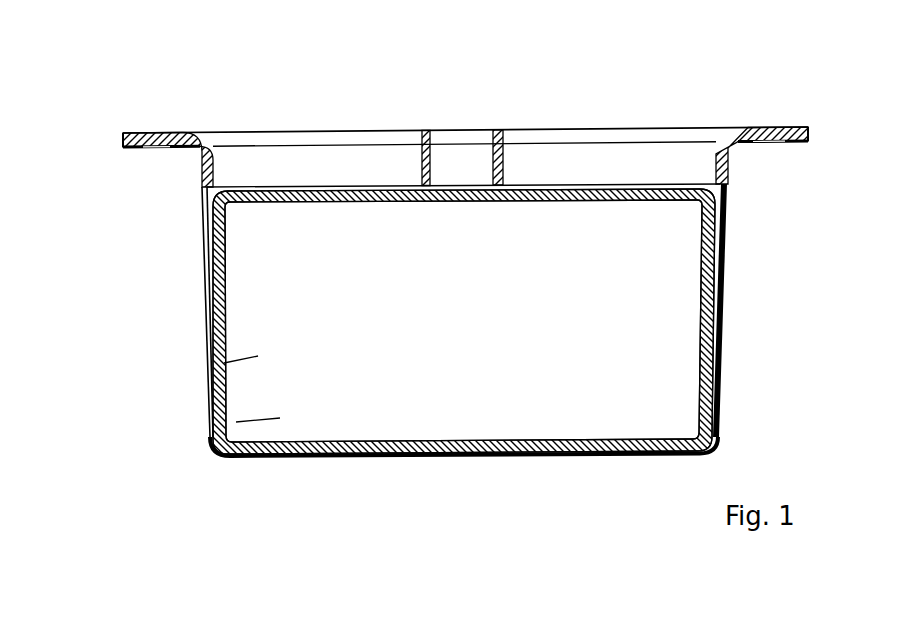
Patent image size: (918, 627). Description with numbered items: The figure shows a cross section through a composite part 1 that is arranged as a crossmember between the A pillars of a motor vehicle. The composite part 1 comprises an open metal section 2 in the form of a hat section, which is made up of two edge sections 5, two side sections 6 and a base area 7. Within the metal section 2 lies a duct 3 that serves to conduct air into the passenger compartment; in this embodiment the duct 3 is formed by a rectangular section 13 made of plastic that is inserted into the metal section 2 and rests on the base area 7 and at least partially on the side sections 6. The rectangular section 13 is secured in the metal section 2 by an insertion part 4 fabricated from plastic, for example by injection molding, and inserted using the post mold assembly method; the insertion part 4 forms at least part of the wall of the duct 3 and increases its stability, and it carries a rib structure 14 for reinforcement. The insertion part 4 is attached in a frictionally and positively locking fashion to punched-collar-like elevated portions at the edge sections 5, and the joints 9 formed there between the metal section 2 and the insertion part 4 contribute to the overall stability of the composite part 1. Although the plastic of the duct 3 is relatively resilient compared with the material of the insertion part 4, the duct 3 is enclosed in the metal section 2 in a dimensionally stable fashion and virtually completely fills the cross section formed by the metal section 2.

The composite part 1 is at (176, 68).
The metal section 2 is at (208, 410).
The duct 3 is at (210, 353).
The insertion part 4 is at (742, 125).
The edge sections 5 is at (143, 149).
The side sections 6 is at (204, 318).
The base area 7 is at (500, 457).
The joints 9 is at (115, 147).
The rectangular section 13 is at (222, 247).
The rib structure 14 is at (507, 162).